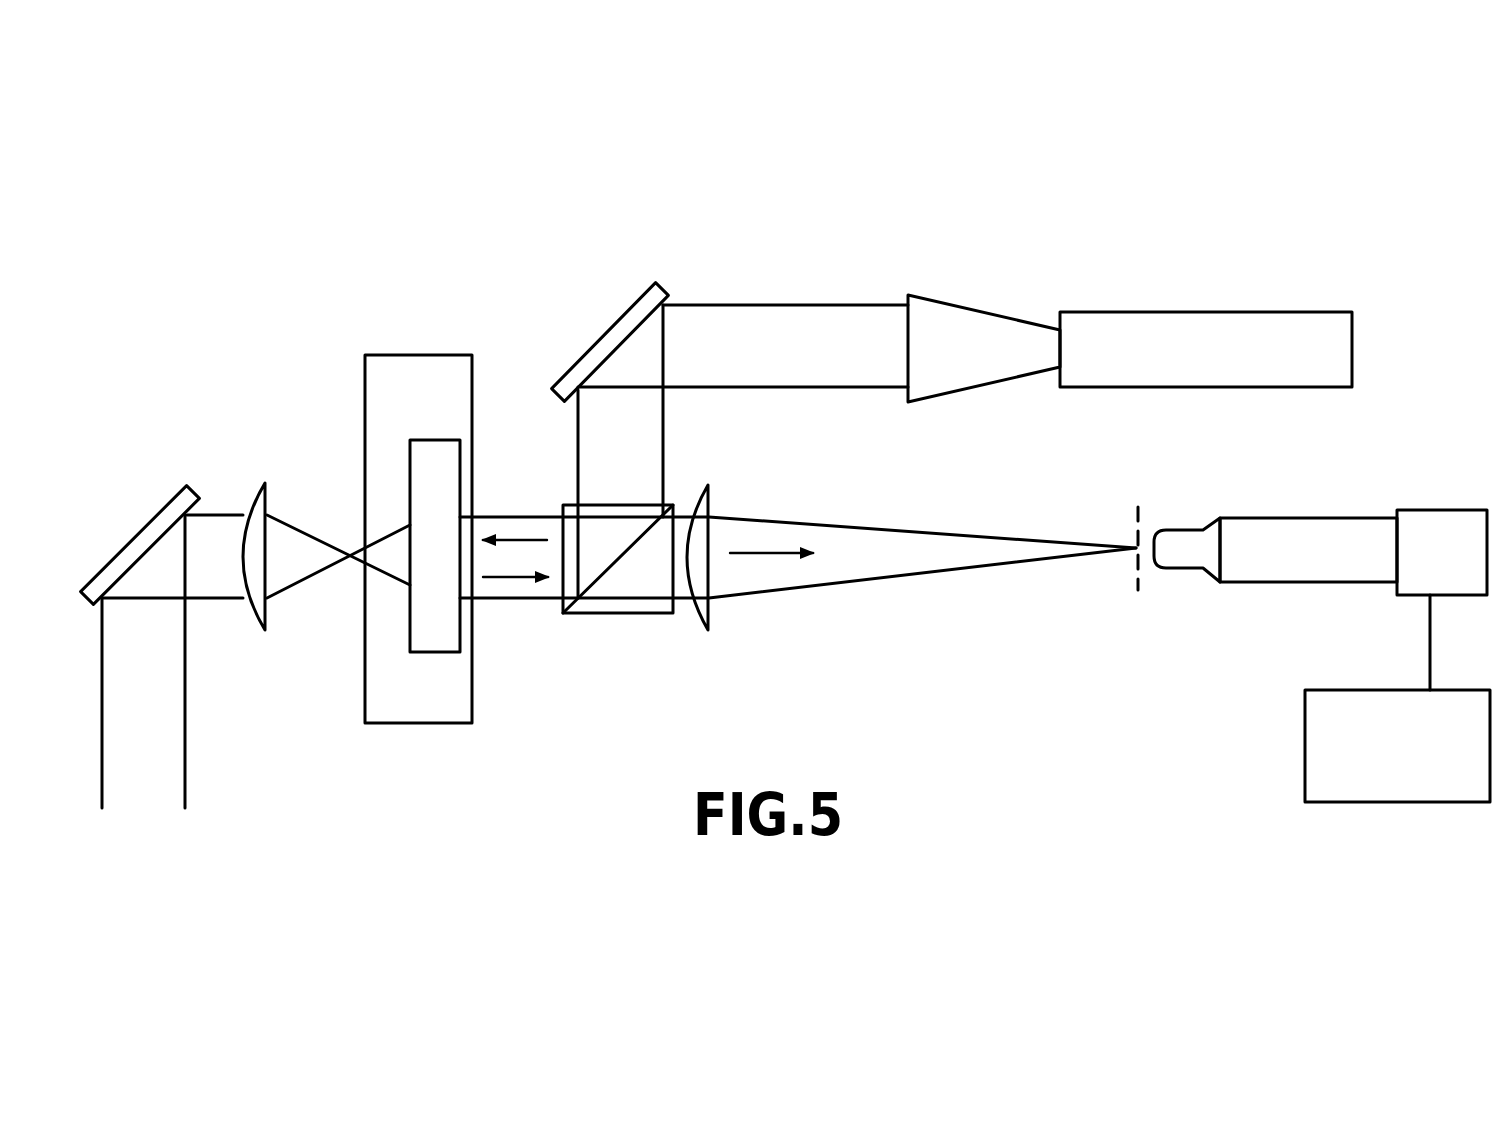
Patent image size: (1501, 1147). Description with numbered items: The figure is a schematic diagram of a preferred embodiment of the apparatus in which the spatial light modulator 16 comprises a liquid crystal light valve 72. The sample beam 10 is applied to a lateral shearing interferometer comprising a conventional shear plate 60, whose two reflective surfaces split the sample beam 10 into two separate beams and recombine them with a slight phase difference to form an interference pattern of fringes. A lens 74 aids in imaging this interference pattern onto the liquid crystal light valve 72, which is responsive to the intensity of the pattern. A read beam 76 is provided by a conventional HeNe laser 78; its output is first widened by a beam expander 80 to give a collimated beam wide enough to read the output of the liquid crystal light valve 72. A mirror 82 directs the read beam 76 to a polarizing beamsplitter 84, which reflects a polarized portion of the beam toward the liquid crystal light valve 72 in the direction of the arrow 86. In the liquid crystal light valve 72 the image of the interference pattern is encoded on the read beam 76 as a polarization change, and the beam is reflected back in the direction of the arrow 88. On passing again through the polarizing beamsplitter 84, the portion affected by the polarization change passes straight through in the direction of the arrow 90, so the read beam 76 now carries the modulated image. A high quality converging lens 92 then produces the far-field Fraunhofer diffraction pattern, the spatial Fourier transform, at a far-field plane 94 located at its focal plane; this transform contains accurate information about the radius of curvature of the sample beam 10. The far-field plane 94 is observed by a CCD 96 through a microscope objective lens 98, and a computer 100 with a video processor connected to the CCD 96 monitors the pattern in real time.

The sample beam 10 is at (163, 775).
The spatial light modulator 16 is at (407, 728).
The shear plate 60 is at (163, 507).
The liquid crystal light valve 72 is at (433, 440).
The lens 74 is at (242, 497).
The read beam 76 is at (640, 459).
The HeNe laser 78 is at (1208, 312).
The beam expander 80 is at (980, 310).
The mirror 82 is at (602, 330).
The polarizing beamsplitter 84 is at (633, 615).
The arrow 86 is at (513, 540).
The arrow 88 is at (520, 578).
The arrow 90 is at (755, 555).
The converging lens 92 is at (708, 502).
The far-field plane 94 is at (1135, 520).
The CCD 96 is at (1425, 510).
The microscope objective lens 98 is at (1197, 522).
The computer 100 is at (1302, 760).